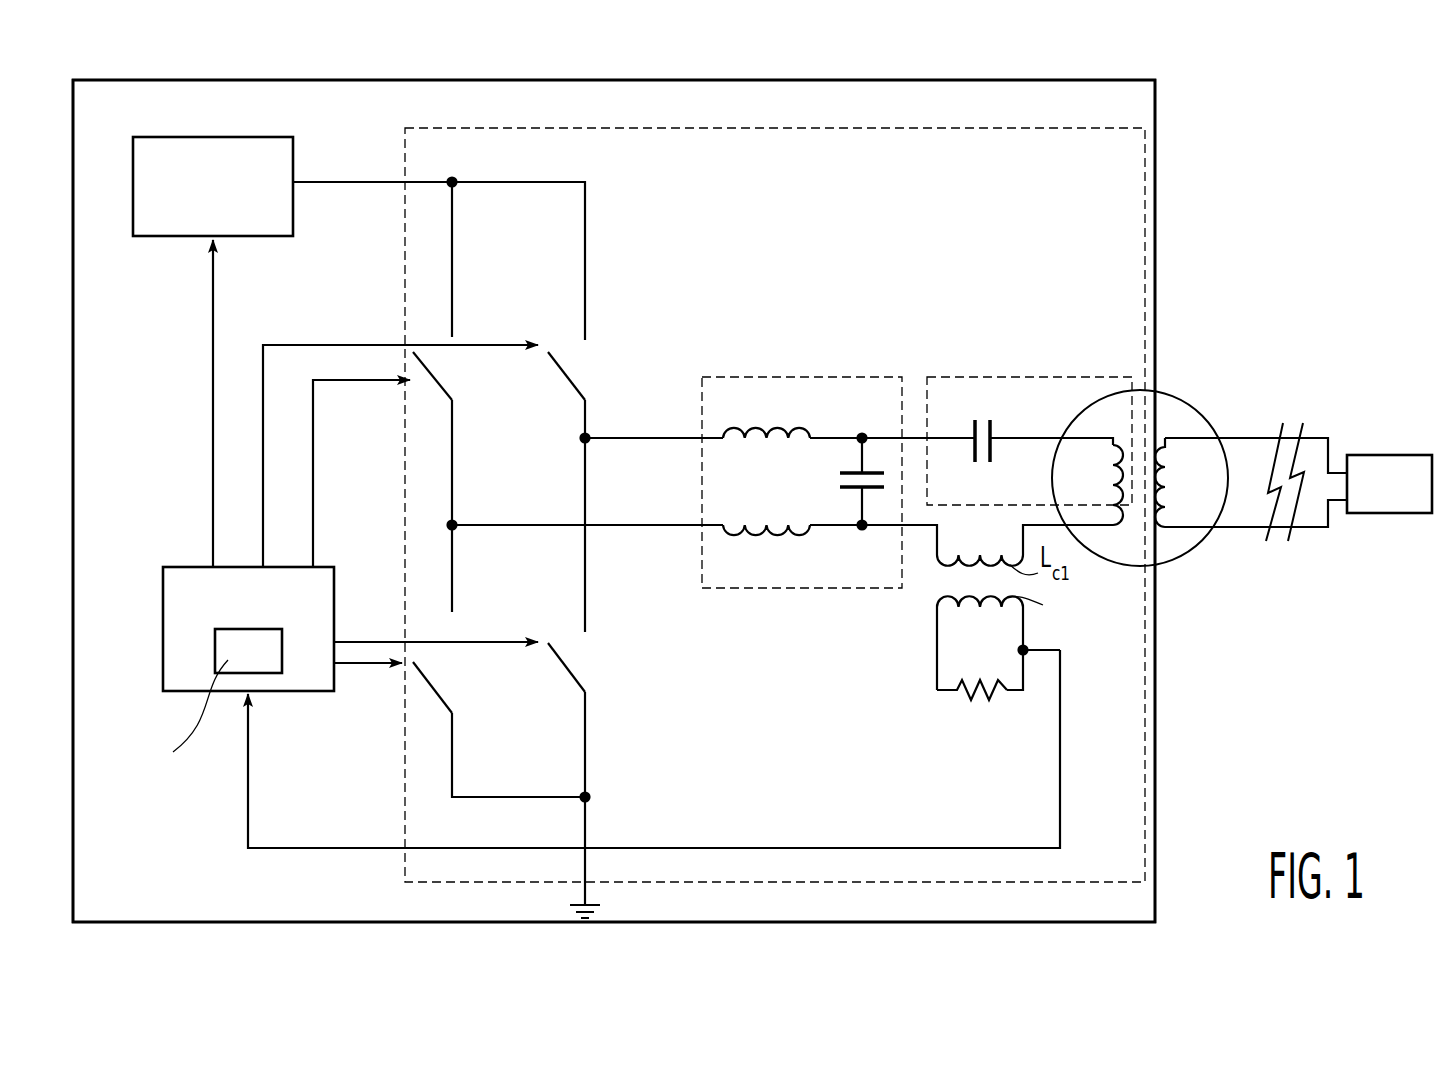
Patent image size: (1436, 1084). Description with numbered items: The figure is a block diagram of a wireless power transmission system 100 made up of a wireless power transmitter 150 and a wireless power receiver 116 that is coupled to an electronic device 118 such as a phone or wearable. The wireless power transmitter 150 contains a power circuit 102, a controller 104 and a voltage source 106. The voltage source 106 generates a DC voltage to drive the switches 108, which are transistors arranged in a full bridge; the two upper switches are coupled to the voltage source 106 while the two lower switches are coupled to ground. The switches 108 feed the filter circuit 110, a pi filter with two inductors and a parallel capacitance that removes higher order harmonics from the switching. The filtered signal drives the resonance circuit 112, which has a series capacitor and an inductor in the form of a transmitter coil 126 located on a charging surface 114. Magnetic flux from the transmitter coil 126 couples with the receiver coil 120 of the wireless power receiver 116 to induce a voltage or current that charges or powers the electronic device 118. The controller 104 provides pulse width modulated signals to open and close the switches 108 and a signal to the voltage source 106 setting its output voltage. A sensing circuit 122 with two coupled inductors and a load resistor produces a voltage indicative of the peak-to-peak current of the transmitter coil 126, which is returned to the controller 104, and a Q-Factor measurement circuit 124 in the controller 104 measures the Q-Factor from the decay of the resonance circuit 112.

The wireless power transmission system 100 is at (1270, 170).
The power circuit 102 is at (1046, 128).
The controller 104 is at (163, 568).
The voltage source 106 is at (238, 137).
The switches 108 is at (633, 728).
The filter circuit 110 is at (784, 377).
The resonance circuit 112 is at (997, 377).
The charging surface 114 is at (1159, 391).
The wireless power receiver 116 is at (1262, 416).
The electronic device 118 is at (1408, 498).
The receiver coil 120 is at (1217, 506).
The sensing circuit 122 is at (950, 703).
The Q-Factor measurement circuit 124 is at (267, 664).
The transmitter coil 126 is at (1100, 497).
The wireless power transmitter 150 is at (130, 906).